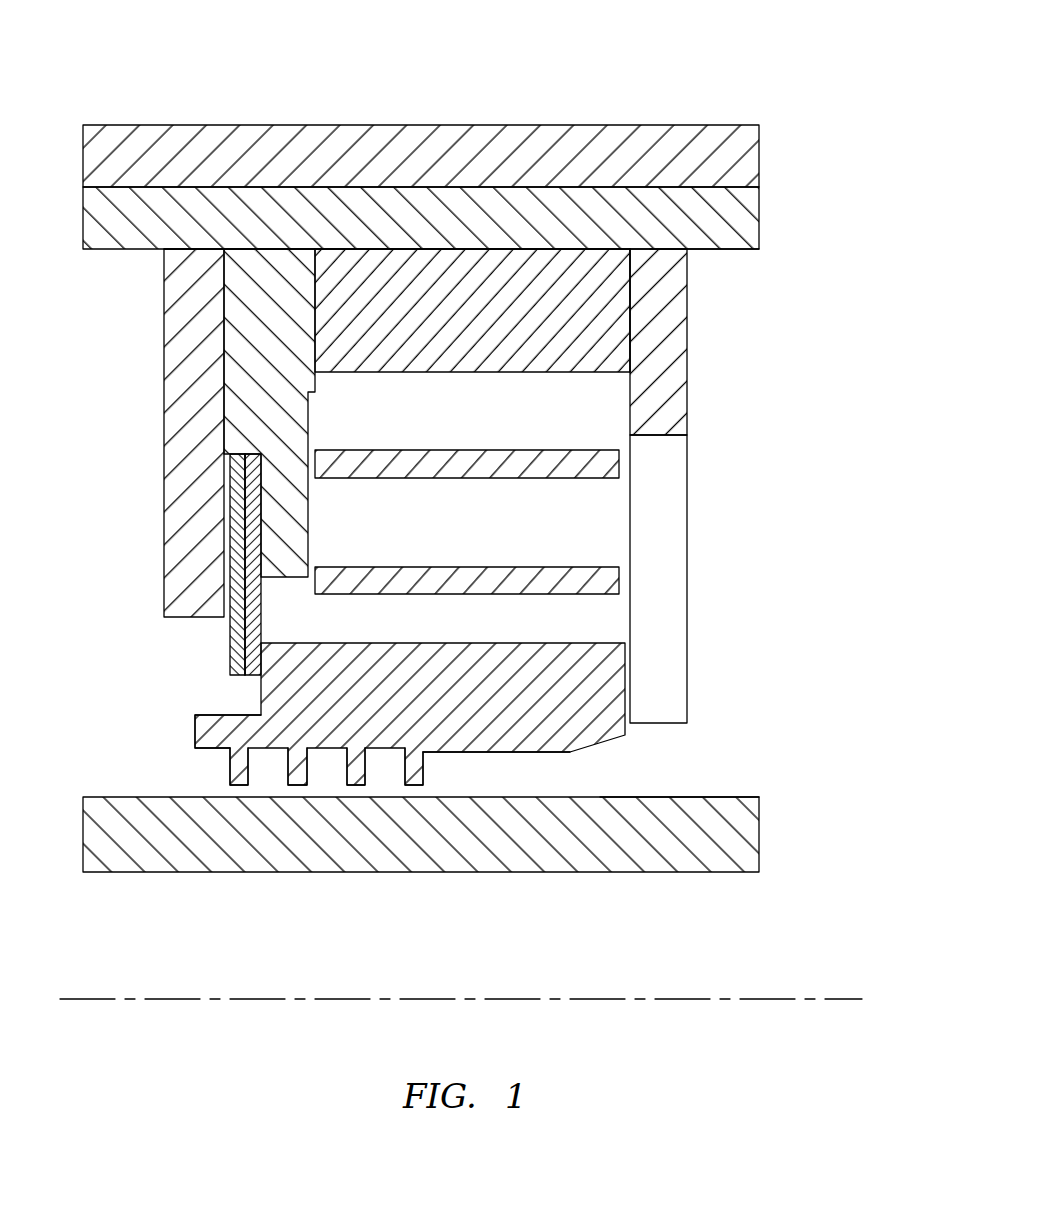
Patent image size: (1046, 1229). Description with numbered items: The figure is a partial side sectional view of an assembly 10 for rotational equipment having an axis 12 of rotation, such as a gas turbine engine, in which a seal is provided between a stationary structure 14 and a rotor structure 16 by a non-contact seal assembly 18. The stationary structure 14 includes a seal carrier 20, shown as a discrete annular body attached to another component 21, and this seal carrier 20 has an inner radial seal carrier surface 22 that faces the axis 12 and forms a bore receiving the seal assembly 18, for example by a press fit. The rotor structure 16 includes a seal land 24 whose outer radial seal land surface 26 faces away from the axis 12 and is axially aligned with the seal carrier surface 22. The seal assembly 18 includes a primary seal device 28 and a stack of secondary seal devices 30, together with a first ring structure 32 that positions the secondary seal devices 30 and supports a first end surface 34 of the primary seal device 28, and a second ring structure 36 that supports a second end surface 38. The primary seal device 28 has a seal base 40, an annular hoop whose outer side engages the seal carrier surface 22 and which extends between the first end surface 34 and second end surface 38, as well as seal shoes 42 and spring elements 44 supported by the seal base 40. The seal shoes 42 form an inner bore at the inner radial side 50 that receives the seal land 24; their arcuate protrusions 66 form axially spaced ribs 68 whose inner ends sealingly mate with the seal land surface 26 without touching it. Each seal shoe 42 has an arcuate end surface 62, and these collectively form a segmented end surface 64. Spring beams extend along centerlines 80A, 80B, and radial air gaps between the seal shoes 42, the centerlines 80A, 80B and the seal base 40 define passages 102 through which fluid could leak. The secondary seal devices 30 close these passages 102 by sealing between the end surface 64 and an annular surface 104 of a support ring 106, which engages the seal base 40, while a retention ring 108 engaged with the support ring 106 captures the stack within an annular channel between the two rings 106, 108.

The assembly 10 is at (737, 75).
The axis of rotation 12 is at (752, 1000).
The stationary structure 14 is at (765, 195).
The rotor structure 16 is at (765, 827).
The non-contact seal assembly 18 is at (760, 400).
The seal carrier 20 is at (760, 221).
The component of the stationary structure 21 is at (760, 150).
The seal carrier surface 22 is at (745, 251).
The seal land 24 is at (760, 852).
The seal land surface 26 is at (733, 796).
The primary seal device 28 is at (560, 246).
The secondary seal devices 30 is at (176, 564).
The first ring structure 32 is at (162, 402).
The first end surface 34 is at (315, 289).
The second ring structure 36 is at (692, 336).
The second end surface 38 is at (633, 287).
The seal base 40 is at (487, 246).
The seal shoes 42 is at (630, 680).
The spring elements 44 is at (622, 581).
The inner radial side 50 is at (440, 779).
The arcuate end surface 62 is at (190, 716).
The end surface 64 is at (260, 685).
The arcuate protrusions 66 is at (322, 829).
The ribs 68 is at (292, 787).
The centerline of spring beam 80A is at (596, 566).
The centerline of spring beam 80B is at (466, 480).
The passages 102 is at (443, 422).
The annular surface 104 is at (258, 524).
The secondary seal device support ring 106 is at (250, 262).
The retention ring 108 is at (188, 262).